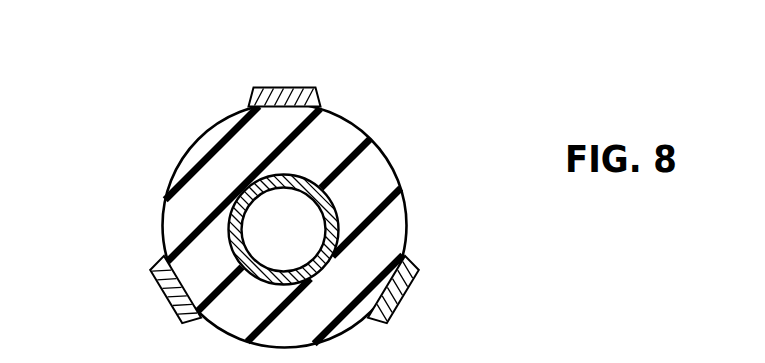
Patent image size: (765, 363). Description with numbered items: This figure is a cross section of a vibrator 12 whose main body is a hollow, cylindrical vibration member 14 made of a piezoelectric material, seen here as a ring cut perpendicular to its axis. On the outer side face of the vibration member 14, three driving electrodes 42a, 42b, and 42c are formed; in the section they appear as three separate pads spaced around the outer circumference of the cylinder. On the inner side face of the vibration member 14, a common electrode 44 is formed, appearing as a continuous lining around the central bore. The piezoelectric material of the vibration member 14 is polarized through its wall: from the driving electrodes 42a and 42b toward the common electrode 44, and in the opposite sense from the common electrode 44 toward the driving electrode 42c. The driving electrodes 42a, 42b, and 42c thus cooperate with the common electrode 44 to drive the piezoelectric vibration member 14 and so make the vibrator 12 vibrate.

The vibrator 12 is at (156, 125).
The vibration member 14 is at (476, 199).
The common electrode 44 is at (230, 208).
The driving electrode 42a is at (303, 89).
The driving electrode 42b is at (407, 302).
The driving electrode 42c is at (165, 295).